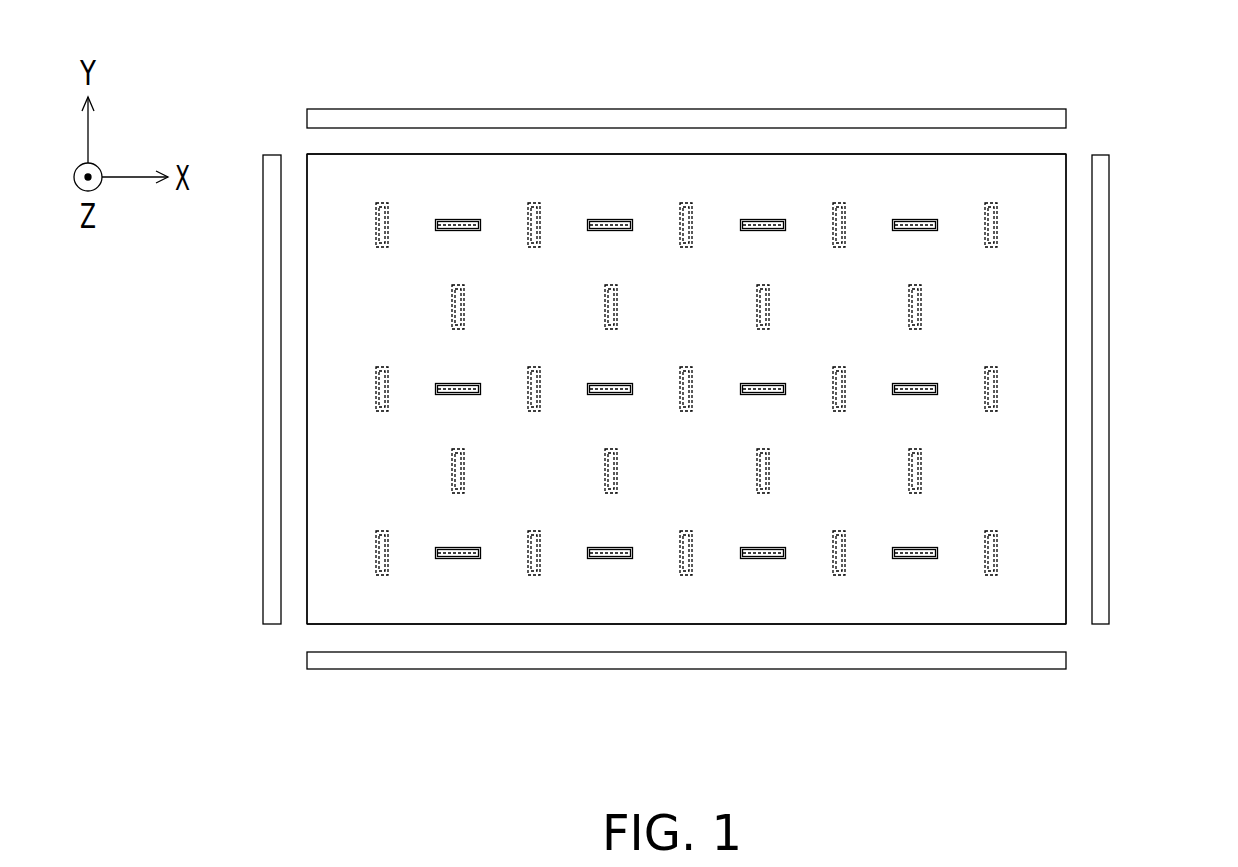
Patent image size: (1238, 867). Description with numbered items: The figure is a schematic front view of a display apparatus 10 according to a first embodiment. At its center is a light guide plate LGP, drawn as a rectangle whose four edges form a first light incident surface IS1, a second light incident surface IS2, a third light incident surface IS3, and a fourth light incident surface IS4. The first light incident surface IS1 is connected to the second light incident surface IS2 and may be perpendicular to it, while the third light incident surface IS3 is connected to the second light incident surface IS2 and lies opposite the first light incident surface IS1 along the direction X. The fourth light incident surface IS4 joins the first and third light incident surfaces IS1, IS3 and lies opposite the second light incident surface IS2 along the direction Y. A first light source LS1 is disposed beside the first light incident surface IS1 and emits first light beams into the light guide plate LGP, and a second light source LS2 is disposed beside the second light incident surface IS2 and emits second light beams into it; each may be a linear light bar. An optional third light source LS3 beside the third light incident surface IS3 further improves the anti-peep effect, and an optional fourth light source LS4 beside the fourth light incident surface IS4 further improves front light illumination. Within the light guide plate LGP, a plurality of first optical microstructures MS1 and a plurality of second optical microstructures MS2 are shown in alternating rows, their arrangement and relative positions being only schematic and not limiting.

The display apparatus 10 is at (712, 401).
The light guide plate LGP is at (1044, 610).
The first light source LS1 is at (276, 295).
The second light source LS2 is at (610, 120).
The third light source LS3 is at (1100, 295).
The fourth light source LS4 is at (610, 658).
The first light incident surface IS1 is at (305, 492).
The second light incident surface IS2 is at (810, 152).
The third light incident surface IS3 is at (1068, 495).
The fourth light incident surface IS4 is at (810, 626).
The first optical microstructures MS1 is at (1000, 218).
The second optical microstructures MS2 is at (916, 219).